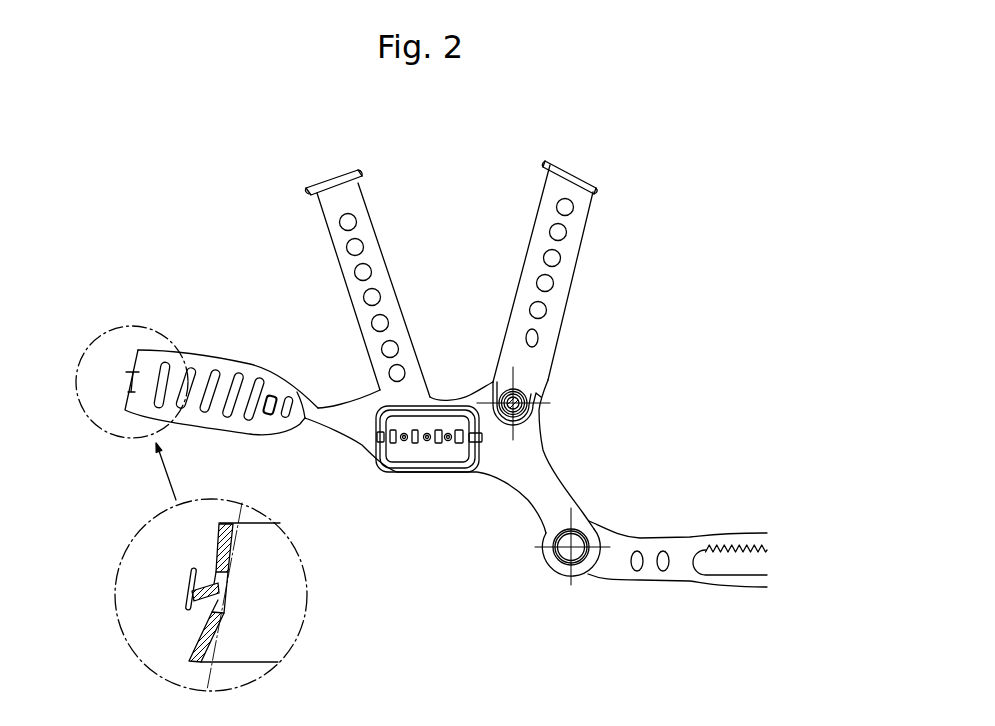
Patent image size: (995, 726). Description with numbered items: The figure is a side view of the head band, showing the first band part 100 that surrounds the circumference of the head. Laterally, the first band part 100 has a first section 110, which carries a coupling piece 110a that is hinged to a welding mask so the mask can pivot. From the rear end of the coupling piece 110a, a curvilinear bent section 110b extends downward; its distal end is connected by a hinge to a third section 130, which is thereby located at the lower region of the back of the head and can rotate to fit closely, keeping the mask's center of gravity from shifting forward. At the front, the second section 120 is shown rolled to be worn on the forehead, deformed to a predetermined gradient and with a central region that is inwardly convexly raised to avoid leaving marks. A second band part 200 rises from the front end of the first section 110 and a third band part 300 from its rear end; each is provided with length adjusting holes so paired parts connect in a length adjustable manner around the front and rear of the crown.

The first band part 100 is at (229, 354).
The first section 110 is at (483, 465).
The coupling piece 110a is at (407, 450).
The curvilinear bent section 110b is at (553, 481).
The second section 120 is at (126, 386).
The third section 130 is at (617, 580).
The second band part 200 is at (385, 250).
The third band part 300 is at (581, 278).